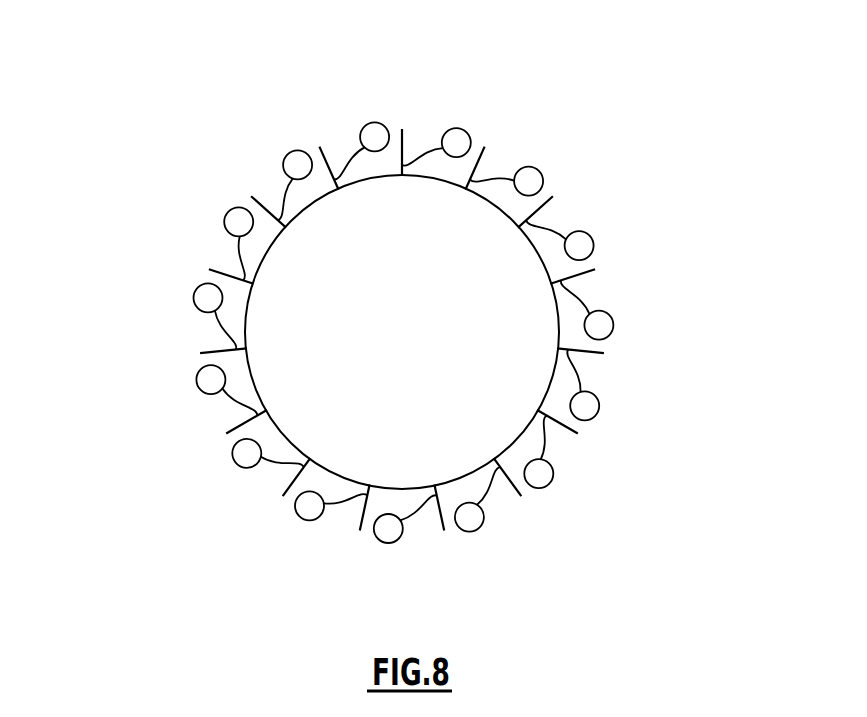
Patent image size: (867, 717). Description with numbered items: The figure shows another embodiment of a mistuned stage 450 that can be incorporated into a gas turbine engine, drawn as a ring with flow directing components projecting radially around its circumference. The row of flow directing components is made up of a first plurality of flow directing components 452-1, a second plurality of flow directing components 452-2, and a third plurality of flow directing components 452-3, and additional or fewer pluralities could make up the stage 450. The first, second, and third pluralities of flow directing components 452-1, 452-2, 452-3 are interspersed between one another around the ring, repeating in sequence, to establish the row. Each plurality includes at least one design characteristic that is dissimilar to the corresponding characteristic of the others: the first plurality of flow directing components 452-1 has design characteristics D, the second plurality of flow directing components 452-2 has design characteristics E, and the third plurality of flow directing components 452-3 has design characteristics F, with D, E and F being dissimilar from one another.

The stage 450 is at (502, 93).
The first plurality of flow directing components 452-1 is at (402, 109).
The second plurality of flow directing components 452-2 is at (500, 135).
The third plurality of flow directing components 452-3 is at (563, 187).